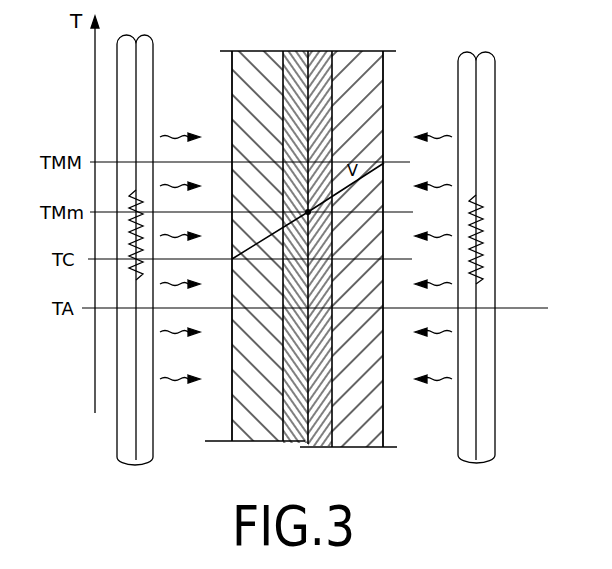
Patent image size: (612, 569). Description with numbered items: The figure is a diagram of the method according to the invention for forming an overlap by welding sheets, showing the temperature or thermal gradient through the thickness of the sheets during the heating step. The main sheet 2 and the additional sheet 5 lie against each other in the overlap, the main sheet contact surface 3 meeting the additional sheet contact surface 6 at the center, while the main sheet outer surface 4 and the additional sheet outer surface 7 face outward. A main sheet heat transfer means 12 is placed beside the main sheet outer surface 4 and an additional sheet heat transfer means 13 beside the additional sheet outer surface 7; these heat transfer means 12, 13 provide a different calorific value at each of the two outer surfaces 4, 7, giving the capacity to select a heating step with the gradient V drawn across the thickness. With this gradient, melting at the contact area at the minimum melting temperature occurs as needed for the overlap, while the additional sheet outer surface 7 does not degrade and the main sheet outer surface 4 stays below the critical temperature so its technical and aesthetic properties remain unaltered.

The main sheet 2 is at (231, 96).
The main sheet contact surface 3 is at (282, 423).
The main sheet outer surface 4 is at (242, 362).
The additional sheet 5 is at (385, 92).
The additional sheet contact surface 6 is at (340, 430).
The additional sheet outer surface 7 is at (366, 358).
The main sheet heat transfer means 12 is at (116, 366).
The additional sheet heat transfer means 13 is at (497, 381).